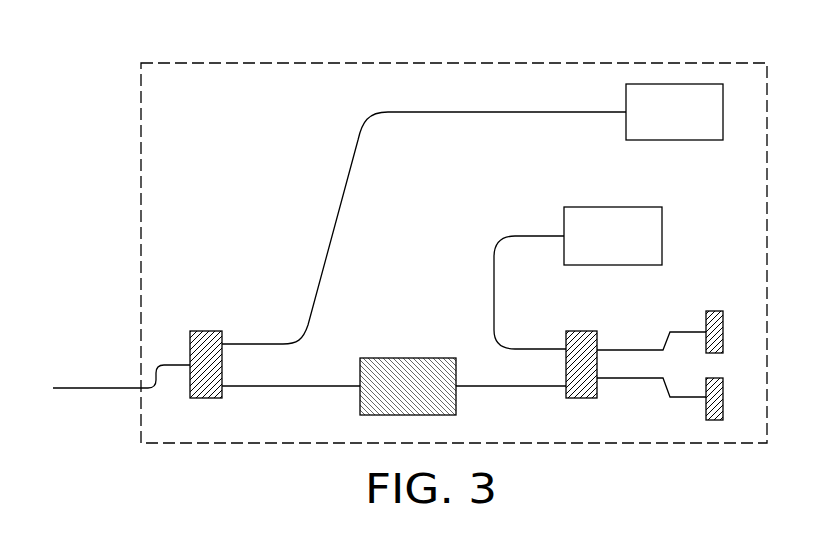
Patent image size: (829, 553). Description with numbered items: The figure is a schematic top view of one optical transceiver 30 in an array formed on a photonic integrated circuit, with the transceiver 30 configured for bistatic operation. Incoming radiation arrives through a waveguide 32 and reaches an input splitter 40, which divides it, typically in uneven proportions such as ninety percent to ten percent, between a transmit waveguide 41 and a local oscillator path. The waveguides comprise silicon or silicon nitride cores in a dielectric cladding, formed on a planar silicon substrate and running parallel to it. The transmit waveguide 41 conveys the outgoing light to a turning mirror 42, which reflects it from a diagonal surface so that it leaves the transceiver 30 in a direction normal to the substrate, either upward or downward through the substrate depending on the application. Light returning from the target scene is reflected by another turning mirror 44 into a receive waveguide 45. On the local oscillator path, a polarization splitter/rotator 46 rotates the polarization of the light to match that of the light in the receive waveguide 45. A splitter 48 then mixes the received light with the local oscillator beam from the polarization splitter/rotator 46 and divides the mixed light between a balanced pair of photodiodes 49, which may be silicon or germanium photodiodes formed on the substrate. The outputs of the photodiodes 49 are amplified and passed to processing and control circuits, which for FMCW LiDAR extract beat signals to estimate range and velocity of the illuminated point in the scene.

The optical transceiver 30 is at (195, 63).
The waveguide 32 is at (80, 388).
The input splitter 40 is at (211, 331).
The transmit waveguide 41 is at (347, 190).
The turning mirror 42 is at (667, 140).
The turning mirror 44 is at (598, 207).
The receive waveguide 45 is at (516, 236).
The polarization splitter/rotator 46 is at (402, 358).
The splitter 48 is at (585, 331).
The photodiodes 49 is at (724, 385).